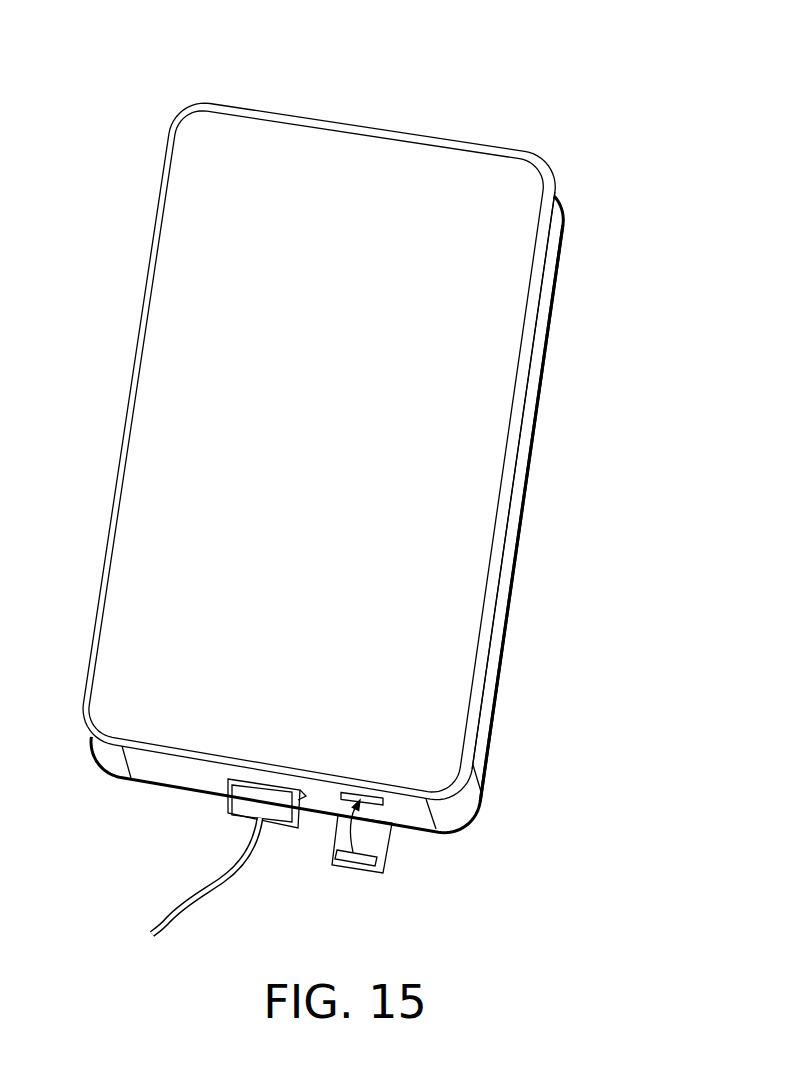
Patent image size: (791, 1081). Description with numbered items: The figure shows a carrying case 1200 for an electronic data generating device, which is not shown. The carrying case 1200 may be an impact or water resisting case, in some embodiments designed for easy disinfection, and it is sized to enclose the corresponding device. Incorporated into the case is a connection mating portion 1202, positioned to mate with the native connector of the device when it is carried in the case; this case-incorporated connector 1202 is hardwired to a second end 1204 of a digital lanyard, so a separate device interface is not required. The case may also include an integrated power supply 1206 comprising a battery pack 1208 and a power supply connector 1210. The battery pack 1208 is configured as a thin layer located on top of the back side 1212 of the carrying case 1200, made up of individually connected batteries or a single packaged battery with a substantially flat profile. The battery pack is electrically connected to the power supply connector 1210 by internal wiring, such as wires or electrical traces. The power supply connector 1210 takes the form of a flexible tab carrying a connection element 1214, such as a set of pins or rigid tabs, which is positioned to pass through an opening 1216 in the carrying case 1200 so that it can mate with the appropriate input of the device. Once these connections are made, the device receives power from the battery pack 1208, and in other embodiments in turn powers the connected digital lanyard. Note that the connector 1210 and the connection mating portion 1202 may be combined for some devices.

The carrying case 1200 is at (166, 77).
The connection mating portion 1202 is at (262, 787).
The second end of a digital lanyard 1204 is at (226, 868).
The integrated power supply 1206 is at (507, 760).
The battery pack 1208 is at (514, 493).
The back side 1212 is at (545, 357).
The opening 1216 is at (348, 791).
The connection element 1214 is at (388, 848).
The power supply connector 1210 is at (354, 876).